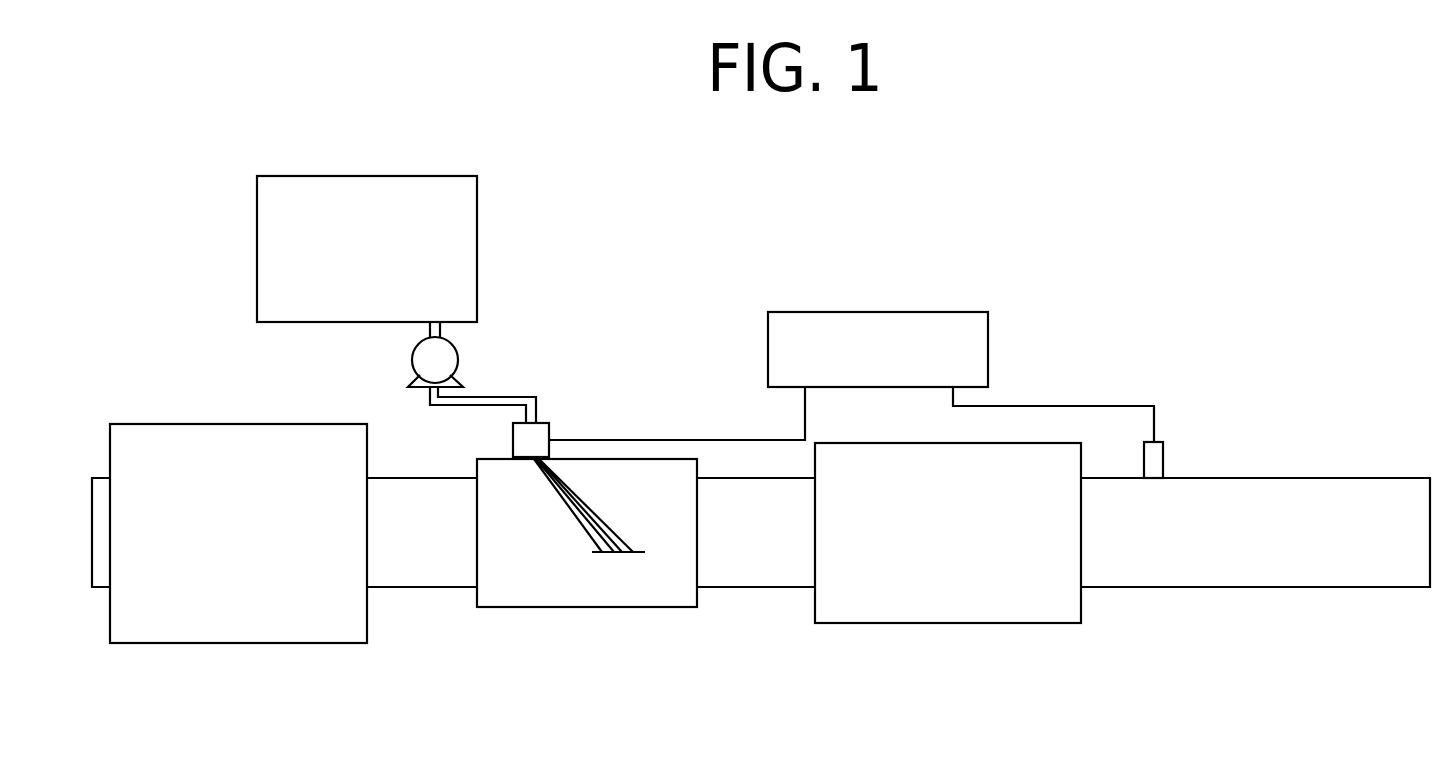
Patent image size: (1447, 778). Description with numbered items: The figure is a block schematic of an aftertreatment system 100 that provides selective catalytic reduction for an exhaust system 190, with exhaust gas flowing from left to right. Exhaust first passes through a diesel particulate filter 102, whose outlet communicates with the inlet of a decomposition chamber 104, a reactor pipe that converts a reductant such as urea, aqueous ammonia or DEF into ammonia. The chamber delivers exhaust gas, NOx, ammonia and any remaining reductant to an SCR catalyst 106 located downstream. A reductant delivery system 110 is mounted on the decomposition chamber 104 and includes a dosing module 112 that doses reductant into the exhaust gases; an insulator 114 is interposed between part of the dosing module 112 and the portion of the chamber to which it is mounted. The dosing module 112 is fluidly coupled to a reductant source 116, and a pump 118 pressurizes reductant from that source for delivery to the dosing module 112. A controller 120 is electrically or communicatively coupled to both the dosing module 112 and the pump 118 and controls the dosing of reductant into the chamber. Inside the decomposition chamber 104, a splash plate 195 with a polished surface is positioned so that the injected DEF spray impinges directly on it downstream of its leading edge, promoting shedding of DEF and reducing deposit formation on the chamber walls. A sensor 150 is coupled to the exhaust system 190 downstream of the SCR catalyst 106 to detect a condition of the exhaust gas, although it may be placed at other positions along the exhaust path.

The aftertreatment system 100 is at (1043, 373).
The diesel particulate filter 102 is at (237, 643).
The decomposition chamber 104 is at (670, 459).
The SCR catalyst 106 is at (945, 623).
The reductant delivery system 110 is at (648, 350).
The dosing module 112 is at (549, 430).
The insulator 114 is at (513, 455).
The reductant source 116 is at (367, 176).
The pump 118 is at (412, 357).
The controller 120 is at (907, 312).
The sensor 150 is at (1198, 447).
The exhaust system 190 is at (447, 686).
The splash plate 195 is at (637, 553).